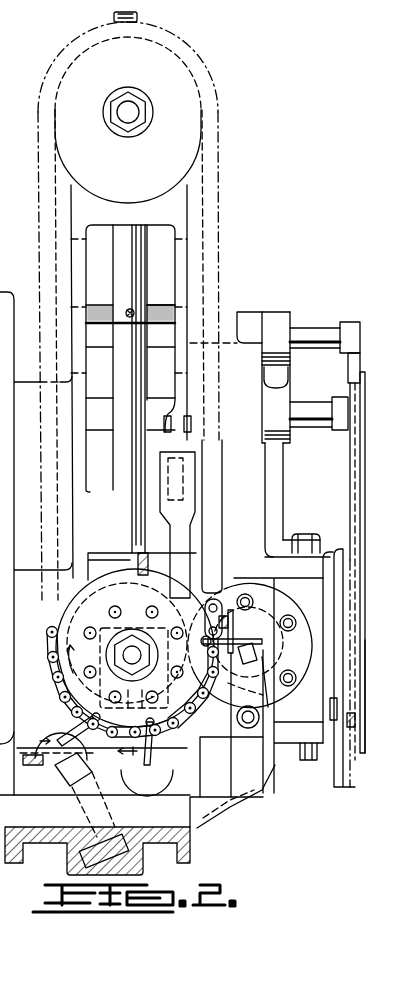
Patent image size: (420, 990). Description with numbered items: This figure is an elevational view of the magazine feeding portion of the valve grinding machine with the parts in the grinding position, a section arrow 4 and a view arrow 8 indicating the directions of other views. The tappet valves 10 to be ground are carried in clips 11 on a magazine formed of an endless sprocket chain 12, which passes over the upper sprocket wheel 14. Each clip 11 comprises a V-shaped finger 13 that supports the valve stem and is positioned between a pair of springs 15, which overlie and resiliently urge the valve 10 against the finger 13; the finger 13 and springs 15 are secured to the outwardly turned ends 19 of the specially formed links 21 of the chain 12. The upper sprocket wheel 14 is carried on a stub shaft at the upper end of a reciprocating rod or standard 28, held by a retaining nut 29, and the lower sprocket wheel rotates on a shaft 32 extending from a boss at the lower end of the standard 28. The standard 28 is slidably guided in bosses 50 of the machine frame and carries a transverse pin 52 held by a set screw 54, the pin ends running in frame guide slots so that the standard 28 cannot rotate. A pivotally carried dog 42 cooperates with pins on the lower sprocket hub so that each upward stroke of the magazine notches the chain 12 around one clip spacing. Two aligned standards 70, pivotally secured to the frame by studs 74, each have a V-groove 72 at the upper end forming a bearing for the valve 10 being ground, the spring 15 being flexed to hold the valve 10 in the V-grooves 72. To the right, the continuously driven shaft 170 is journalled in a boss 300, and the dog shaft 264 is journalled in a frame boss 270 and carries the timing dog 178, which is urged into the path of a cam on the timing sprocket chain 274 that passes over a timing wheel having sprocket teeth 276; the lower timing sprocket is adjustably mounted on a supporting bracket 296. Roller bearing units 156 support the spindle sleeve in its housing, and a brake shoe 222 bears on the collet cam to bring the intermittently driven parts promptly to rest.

The actuating bar 4 is at (153, 544).
The drive chain 8 is at (80, 613).
The tappet valve 10 is at (252, 650).
The clip 11 is at (231, 612).
The endless sprocket chain 12 is at (212, 192).
The V-shaped finger 13 is at (233, 627).
The upper sprocket wheel 14 is at (183, 82).
The springs 15 is at (237, 638).
The outwardly turned ends 19 is at (222, 605).
The specially formed links 21 is at (208, 604).
The reciprocating rod or standard 28 is at (131, 389).
The nut 29 is at (131, 115).
The shaft 32 is at (130, 652).
The dog 42 is at (170, 535).
The bosses 50 is at (128, 212).
The transverse pin 52 is at (162, 305).
The set screw 54 is at (131, 318).
The standards 70 is at (250, 790).
The V-groove 72 is at (300, 700).
The studs 74 is at (254, 722).
The roller bearing units 156 is at (264, 522).
The continuously driven shaft 170 is at (312, 422).
The timing dog 178 is at (355, 360).
The shoe 222 is at (352, 437).
The dog shaft 264 is at (312, 335).
The frame boss 270 is at (253, 312).
The sprocket chain 274 is at (353, 514).
The sprocket teeth 276 is at (353, 757).
The supporting bracket 296 is at (343, 757).
The boss 300 is at (268, 408).